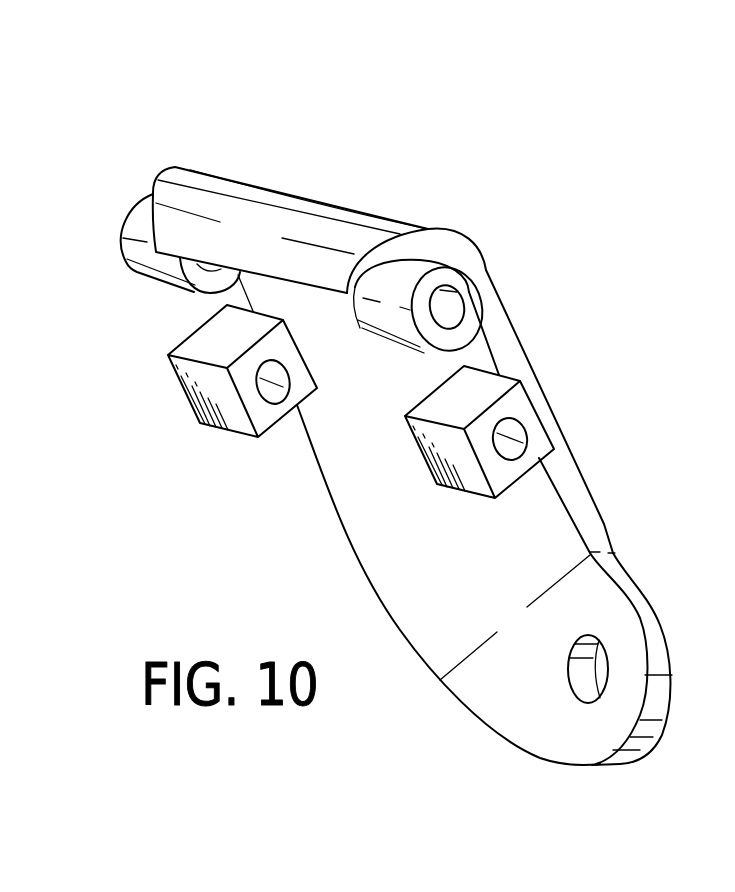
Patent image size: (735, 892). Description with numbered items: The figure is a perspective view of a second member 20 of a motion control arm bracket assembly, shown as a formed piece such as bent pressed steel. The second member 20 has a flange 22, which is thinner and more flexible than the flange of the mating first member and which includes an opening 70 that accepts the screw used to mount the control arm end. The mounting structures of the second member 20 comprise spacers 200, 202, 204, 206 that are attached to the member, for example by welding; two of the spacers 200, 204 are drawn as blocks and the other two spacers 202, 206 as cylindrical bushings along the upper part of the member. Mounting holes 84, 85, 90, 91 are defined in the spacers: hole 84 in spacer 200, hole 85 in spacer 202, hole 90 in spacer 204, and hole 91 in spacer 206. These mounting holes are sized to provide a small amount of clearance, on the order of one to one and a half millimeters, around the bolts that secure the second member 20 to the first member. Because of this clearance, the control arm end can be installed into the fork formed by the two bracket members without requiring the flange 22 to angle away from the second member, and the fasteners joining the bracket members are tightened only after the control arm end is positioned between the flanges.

The second member 20 is at (324, 162).
The spacer 206 is at (141, 198).
The mounting hole 91 is at (184, 287).
The spacer 202 is at (473, 310).
The mounting hole 85 is at (453, 300).
The flange 22 is at (490, 688).
The opening 70 is at (598, 667).
The spacer 204 is at (237, 423).
The mounting hole 90 is at (287, 388).
The spacer 200 is at (537, 447).
The mounting hole 84 is at (513, 432).